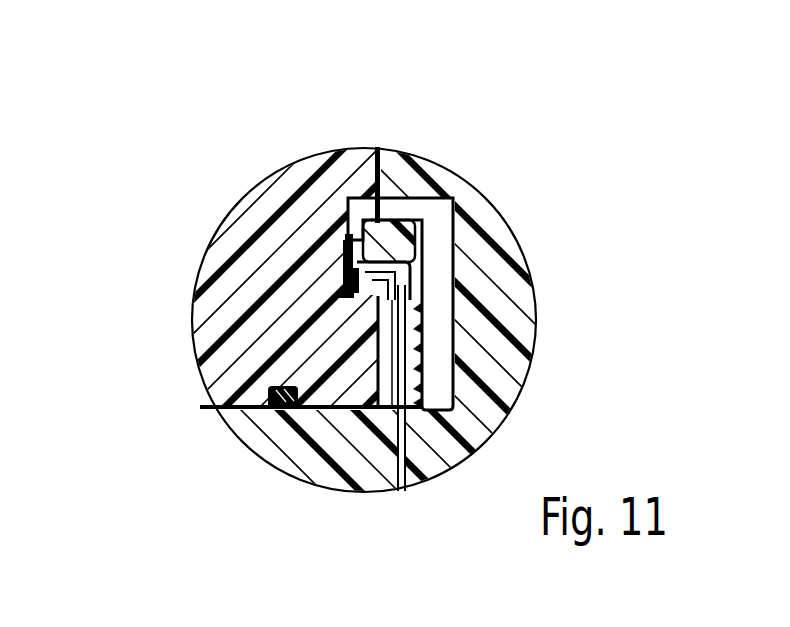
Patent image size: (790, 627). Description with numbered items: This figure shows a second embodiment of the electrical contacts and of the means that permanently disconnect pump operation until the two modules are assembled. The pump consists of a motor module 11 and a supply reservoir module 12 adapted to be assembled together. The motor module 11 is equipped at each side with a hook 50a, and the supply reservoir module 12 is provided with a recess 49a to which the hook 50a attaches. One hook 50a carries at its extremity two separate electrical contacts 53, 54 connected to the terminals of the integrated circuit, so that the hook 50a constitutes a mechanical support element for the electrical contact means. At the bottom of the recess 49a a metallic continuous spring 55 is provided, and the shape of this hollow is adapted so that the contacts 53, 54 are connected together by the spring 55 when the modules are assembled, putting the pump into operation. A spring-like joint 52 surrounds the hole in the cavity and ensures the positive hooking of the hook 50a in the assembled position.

The motor module 11 is at (513, 373).
The supply module 12 is at (218, 322).
The recess 49a is at (362, 212).
The hook 50a is at (443, 194).
The joint 52 is at (273, 410).
The electrical contact 53 is at (346, 238).
The electrical contact 54 is at (388, 278).
The metallic continuous spring 55 is at (343, 268).